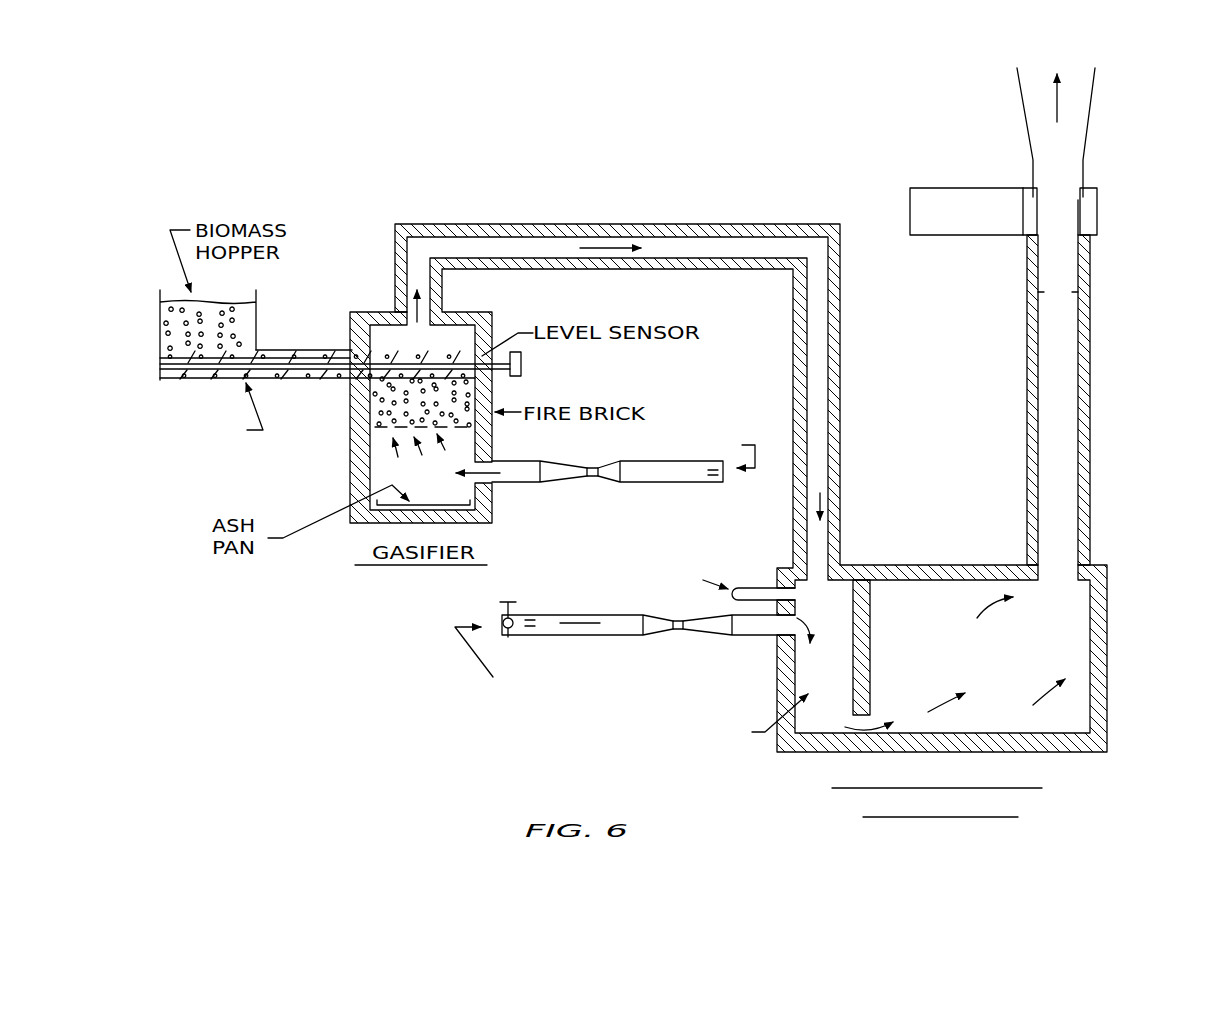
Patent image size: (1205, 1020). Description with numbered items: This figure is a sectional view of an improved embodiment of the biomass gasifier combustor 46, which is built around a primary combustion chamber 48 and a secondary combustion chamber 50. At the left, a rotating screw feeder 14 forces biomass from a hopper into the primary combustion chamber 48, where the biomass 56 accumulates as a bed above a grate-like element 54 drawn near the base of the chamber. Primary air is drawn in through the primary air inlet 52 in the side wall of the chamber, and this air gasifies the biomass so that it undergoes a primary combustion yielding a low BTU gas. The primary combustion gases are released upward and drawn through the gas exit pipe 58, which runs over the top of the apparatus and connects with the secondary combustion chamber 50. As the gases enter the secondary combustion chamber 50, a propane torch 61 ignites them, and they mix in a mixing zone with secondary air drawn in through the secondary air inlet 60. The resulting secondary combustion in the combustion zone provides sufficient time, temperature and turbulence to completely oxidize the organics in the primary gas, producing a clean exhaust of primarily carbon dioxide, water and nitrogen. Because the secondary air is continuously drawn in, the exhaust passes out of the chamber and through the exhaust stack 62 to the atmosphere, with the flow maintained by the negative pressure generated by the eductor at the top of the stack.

The biomass gasifier combustor 46 is at (615, 132).
The screw feeder 14 is at (245, 372).
The gas exit pipe 58 is at (545, 250).
The biomass 56 is at (462, 400).
The grate 54 is at (397, 428).
The primary combustion chamber 48 is at (350, 477).
The primary air inlet 52 is at (728, 472).
The exhaust stack 62 is at (1092, 373).
The secondary air inlet 60 is at (503, 620).
The propane torch 61 is at (627, 563).
The secondary combustion chamber 50 is at (1088, 663).